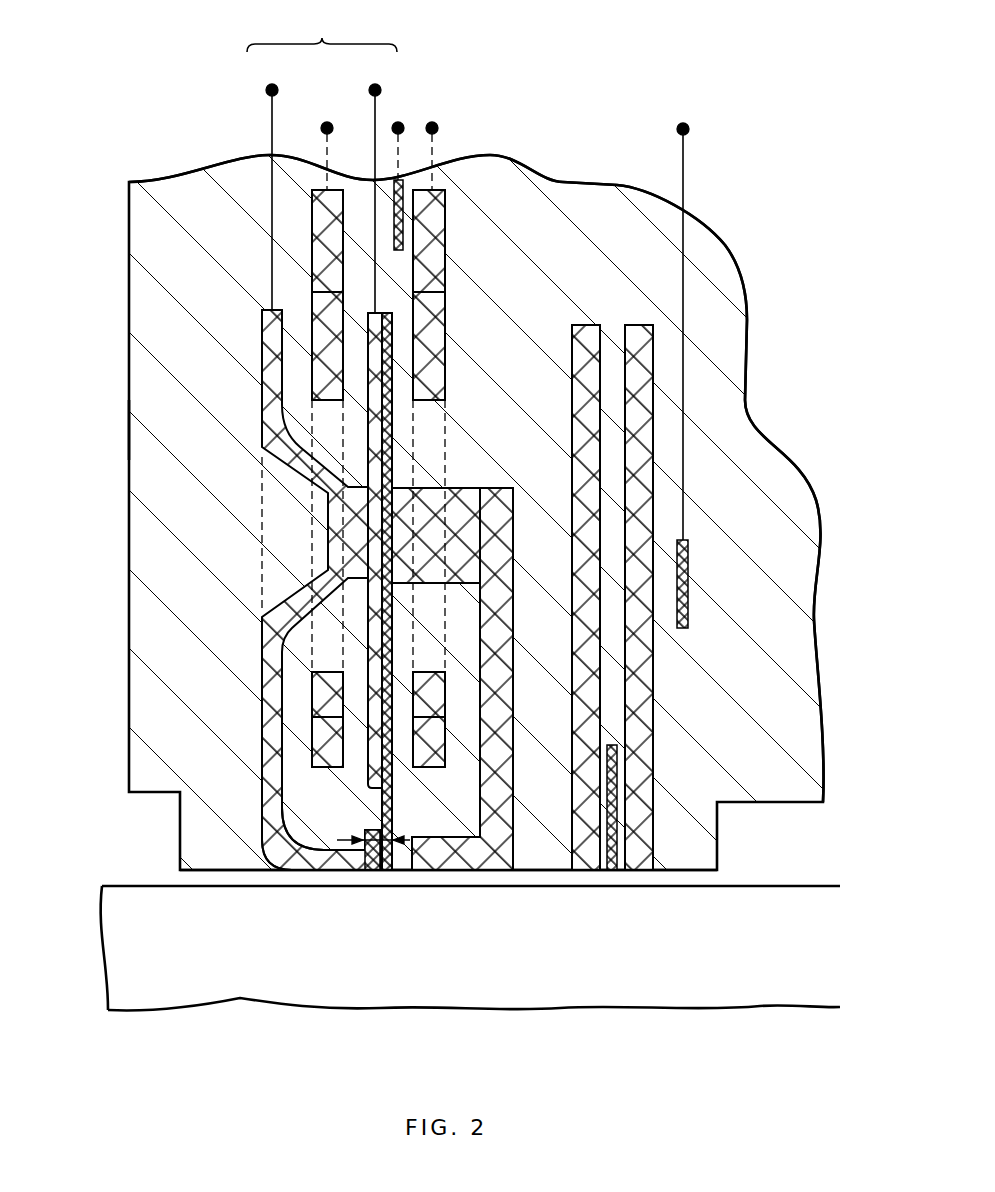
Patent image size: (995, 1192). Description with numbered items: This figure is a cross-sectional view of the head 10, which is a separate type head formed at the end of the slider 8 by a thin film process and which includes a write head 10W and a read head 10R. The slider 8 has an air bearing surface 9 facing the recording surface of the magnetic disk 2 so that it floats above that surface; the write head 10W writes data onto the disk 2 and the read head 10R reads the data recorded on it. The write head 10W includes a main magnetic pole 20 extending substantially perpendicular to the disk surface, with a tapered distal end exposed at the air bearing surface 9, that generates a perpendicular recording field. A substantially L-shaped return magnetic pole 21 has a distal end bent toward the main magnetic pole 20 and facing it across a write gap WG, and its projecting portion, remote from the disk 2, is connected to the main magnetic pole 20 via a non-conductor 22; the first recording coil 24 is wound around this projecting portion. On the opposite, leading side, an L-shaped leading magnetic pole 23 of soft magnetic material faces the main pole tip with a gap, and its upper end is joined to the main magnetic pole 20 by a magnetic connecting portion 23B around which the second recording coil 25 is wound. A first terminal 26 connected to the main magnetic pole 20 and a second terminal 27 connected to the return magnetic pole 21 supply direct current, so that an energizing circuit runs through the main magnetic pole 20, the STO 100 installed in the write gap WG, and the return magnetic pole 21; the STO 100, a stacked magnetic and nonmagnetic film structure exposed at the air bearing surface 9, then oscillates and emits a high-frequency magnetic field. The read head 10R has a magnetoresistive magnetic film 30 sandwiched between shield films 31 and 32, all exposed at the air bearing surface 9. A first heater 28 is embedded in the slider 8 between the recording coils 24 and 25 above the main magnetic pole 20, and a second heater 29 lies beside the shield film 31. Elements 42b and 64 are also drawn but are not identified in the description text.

The magnetic disk 2 is at (102, 938).
The slider 8 is at (725, 288).
The air bearing surface 9 is at (678, 870).
The head 10 is at (724, 178).
The write head 10W is at (322, 31).
The read head 10R is at (632, 320).
The main magnetic pole 20 is at (393, 807).
The return magnetic pole 21 is at (310, 857).
The non-conductor 22 is at (345, 505).
The leading magnetic pole 23 is at (484, 860).
The connecting portion 23B is at (458, 500).
The first recording coil 24 is at (312, 293).
The second recording coil 25 is at (445, 318).
The first terminal 26 is at (378, 187).
The second terminal 27 is at (274, 186).
The first heater 28 is at (398, 252).
The second heater 29 is at (688, 605).
The magnetic film 30 is at (618, 830).
The shield film 31 is at (633, 410).
The shield film 32 is at (585, 360).
The insulating layer 42b is at (129, 426).
The nonmagnetic layer 64 is at (507, 590).
The STO 100 is at (373, 870).
The write gap WG is at (367, 833).